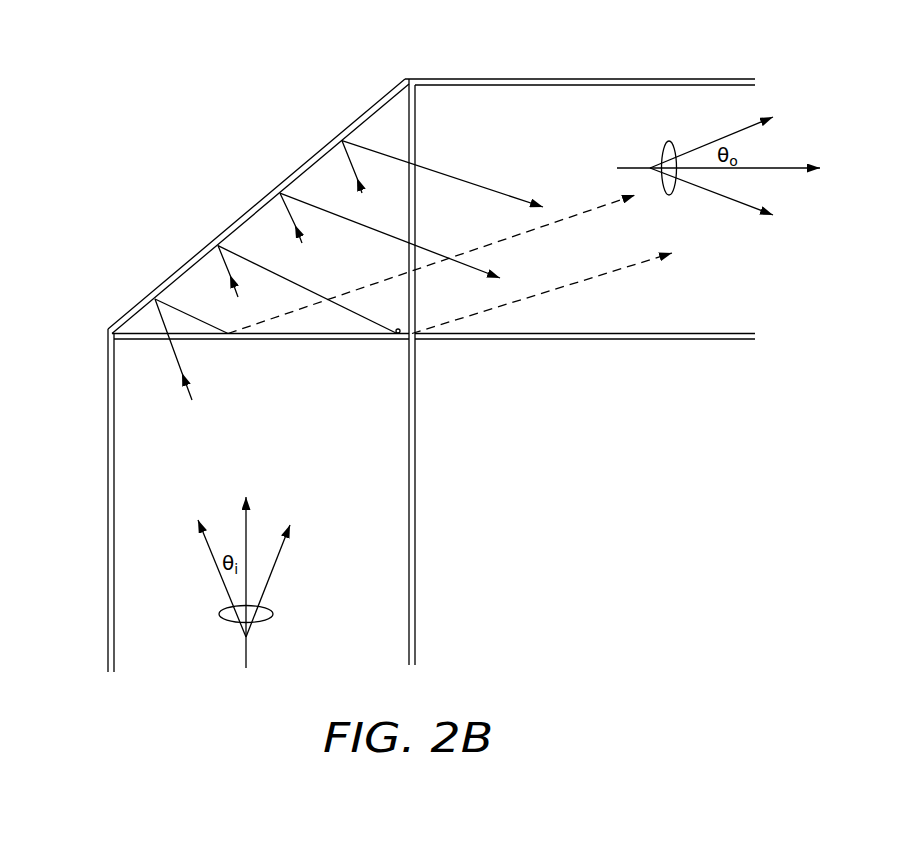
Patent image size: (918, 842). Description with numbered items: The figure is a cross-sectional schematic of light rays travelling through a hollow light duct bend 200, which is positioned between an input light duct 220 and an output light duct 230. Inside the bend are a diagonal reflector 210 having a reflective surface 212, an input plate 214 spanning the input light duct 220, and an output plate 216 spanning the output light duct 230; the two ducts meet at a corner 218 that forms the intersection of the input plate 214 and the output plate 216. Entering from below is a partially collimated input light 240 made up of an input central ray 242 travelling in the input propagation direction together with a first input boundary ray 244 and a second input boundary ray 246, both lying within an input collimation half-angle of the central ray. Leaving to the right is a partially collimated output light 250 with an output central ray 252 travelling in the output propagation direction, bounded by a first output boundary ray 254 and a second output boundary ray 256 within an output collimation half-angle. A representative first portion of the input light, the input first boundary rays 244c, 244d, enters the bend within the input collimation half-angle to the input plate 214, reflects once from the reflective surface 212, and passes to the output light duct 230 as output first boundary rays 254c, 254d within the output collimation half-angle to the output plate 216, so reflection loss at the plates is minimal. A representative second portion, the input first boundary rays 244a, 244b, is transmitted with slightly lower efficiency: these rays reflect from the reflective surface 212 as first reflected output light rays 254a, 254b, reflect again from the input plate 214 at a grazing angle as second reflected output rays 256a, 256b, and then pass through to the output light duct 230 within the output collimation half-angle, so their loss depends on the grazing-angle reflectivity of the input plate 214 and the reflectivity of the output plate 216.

The hollow light duct bend 200 is at (172, 118).
The diagonal reflector 210 is at (365, 112).
The reflective surface 212 is at (253, 220).
The input plate 214 is at (130, 343).
The output plate 216 is at (417, 102).
The corner 218 is at (417, 342).
The input light duct 220 is at (108, 532).
The output light duct 230 is at (545, 79).
The partially collimated input light 240 is at (263, 622).
The input central ray 242 is at (248, 525).
The first input boundary ray 244 is at (210, 550).
The input first boundary ray 244a is at (183, 387).
The input first boundary ray 244b is at (243, 292).
The input first boundary ray 244c is at (300, 237).
The input first boundary ray 244d is at (347, 165).
The second input boundary ray 246 is at (280, 558).
The partially collimated output light 250 is at (662, 150).
The output central ray 252 is at (782, 167).
The first output boundary ray 254 is at (723, 195).
The first reflected output light ray 254a is at (187, 312).
The first reflected output light ray 254b is at (355, 317).
The output first boundary ray 254c is at (437, 250).
The output first boundary ray 254d is at (442, 170).
The second output boundary ray 256 is at (722, 138).
The second reflected output ray 256a is at (582, 212).
The second reflected output ray 256b is at (580, 280).